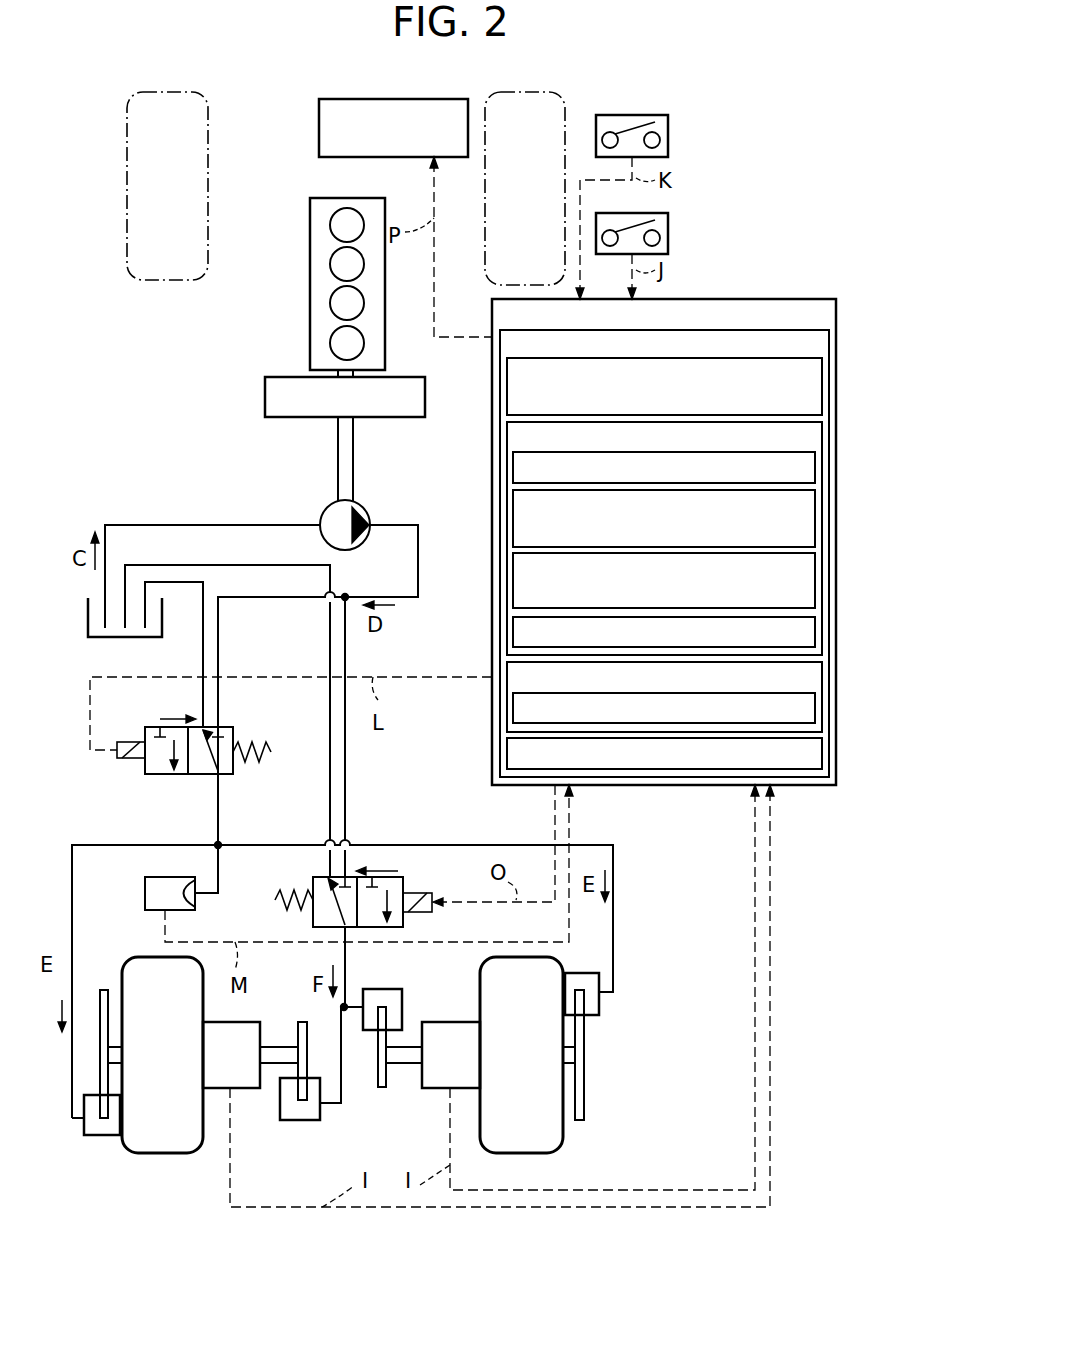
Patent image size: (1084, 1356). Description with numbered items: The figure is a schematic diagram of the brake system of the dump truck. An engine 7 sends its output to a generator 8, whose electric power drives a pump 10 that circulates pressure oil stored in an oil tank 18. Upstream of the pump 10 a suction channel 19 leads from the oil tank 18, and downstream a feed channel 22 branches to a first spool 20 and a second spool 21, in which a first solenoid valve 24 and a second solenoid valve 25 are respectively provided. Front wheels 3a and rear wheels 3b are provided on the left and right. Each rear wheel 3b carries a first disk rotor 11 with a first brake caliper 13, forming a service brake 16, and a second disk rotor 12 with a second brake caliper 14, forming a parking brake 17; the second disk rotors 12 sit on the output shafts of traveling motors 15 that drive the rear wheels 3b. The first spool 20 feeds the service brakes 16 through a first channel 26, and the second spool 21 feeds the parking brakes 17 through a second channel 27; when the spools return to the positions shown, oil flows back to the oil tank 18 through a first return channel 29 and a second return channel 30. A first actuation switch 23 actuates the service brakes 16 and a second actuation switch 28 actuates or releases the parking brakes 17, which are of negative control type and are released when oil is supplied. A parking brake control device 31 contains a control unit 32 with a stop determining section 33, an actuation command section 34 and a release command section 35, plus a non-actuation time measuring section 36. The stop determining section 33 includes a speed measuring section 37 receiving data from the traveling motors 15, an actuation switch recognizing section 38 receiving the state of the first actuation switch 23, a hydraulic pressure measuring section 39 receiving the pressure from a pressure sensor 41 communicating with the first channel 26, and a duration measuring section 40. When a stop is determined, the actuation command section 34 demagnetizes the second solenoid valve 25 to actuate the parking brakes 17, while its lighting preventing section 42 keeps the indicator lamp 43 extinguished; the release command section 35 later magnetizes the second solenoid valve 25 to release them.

The front wheels 3a is at (208, 100).
The rear wheels 3b is at (155, 1153).
The engine 7 is at (310, 232).
The generator 8 is at (265, 390).
The pump 10 is at (322, 512).
The first disk rotors 11 is at (104, 990).
The second disk rotors 12 is at (300, 1022).
The first brake calipers 13 is at (95, 1135).
The second brake calipers 14 is at (402, 1005).
The traveling motors 15 is at (240, 1088).
The service brakes 16 is at (92, 1080).
The parking brakes 17 is at (316, 1068).
The oil tank 18 is at (88, 618).
The suction channel 19 is at (160, 525).
The first spool 20 is at (240, 769).
The second spool 21 is at (313, 917).
The feed channel 22 is at (418, 567).
The first actuation switch 23 is at (668, 132).
The first solenoid valve 24 is at (125, 762).
The second solenoid valve 25 is at (432, 893).
The first channel 26 is at (415, 845).
The second channel 27 is at (346, 960).
The second actuation switch 28 is at (668, 230).
The first return channel 29 is at (203, 655).
The second return channel 30 is at (240, 565).
The parking brake control device 31 is at (492, 300).
The control unit 32 is at (500, 333).
The stop determining section 33 is at (507, 435).
The actuation command section 34 is at (507, 668).
The release command section 35 is at (507, 753).
The non-actuation time measuring section 36 is at (507, 385).
The speed measuring section 37 is at (513, 468).
The actuation switch recognizing section 38 is at (513, 506).
The hydraulic pressure measuring section 39 is at (513, 568).
The duration measuring section 40 is at (513, 622).
The pressure sensor 41 is at (145, 890).
The lighting preventing section 42 is at (513, 706).
The indicator lamp 43 is at (319, 140).